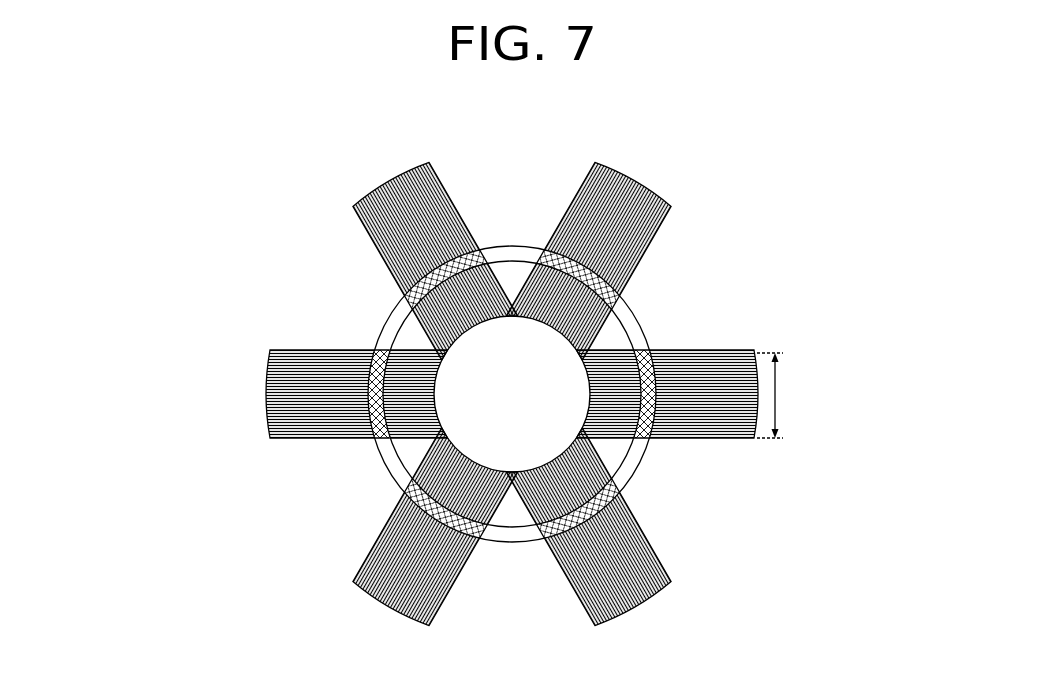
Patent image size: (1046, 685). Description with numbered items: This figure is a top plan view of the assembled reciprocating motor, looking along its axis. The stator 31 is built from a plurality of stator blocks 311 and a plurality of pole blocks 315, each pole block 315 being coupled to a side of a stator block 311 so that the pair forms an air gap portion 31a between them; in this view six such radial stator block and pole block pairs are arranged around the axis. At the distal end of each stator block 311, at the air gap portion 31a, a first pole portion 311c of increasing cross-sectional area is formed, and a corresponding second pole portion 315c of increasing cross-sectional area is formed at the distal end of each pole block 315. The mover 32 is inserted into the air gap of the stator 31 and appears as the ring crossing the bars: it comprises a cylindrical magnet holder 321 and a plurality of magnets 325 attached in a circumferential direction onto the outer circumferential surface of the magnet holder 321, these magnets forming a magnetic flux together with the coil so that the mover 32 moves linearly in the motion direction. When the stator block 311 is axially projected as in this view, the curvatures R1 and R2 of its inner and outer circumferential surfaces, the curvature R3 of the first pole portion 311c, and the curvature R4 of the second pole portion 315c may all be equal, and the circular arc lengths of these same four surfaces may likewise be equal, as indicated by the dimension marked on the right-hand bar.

The stator 31 is at (357, 363).
The stator block 311 is at (397, 350).
The pole block 315 is at (388, 281).
The air gap portion 31a is at (378, 440).
The first pole portion 311c is at (626, 278).
The second pole portion 315c is at (613, 485).
The mover 32 is at (512, 449).
The magnet holder 321 is at (517, 535).
The magnet 325 is at (482, 540).
The curvature of inner circumferential surface of stator block R1 is at (506, 294).
The curvature of outer circumferential surface of stator block R2 is at (412, 158).
The curvature of first pole portion R3 is at (467, 230).
The curvature of second pole portion R4 is at (483, 244).